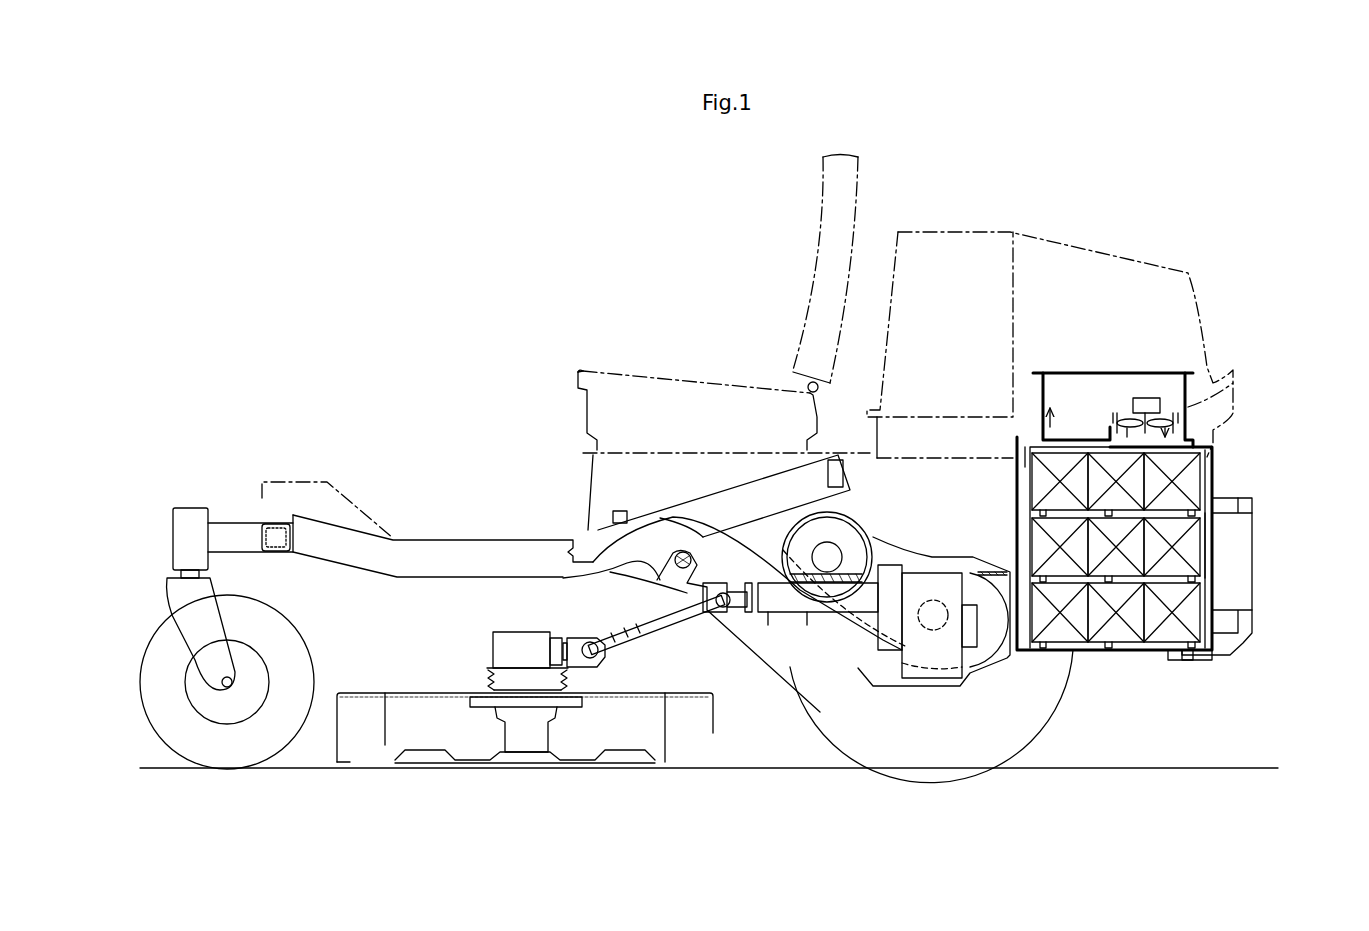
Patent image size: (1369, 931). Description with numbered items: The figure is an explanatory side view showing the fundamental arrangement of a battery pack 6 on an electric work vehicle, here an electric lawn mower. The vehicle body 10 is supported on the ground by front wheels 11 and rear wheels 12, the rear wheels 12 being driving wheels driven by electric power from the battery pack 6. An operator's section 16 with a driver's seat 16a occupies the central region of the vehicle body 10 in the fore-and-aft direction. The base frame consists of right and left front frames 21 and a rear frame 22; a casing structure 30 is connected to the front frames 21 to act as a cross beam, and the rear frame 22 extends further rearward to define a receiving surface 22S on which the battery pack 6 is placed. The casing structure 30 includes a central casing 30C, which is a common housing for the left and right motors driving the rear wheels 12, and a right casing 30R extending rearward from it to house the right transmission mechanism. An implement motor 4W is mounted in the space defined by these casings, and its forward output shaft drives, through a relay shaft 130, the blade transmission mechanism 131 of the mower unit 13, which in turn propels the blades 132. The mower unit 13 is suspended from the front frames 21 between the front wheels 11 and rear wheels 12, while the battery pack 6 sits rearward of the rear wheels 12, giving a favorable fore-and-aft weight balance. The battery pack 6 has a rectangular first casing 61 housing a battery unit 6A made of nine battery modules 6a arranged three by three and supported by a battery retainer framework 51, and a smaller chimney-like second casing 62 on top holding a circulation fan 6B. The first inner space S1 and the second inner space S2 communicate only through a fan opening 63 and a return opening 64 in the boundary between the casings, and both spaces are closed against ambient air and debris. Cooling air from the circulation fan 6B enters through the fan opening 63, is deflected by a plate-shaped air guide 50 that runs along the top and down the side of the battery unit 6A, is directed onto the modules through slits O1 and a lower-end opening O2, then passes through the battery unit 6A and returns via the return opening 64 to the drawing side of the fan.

The operator's section 16 is at (557, 226).
The driver's seat 16a is at (632, 368).
The vehicle body 10 is at (315, 510).
The front wheels 11 is at (227, 762).
The rear wheels 12 is at (990, 757).
The mower unit 13 is at (400, 684).
The front frames 21 is at (440, 568).
The rear frame 22 is at (1250, 637).
The receiving surface 22S is at (1173, 655).
The relay shaft 130 is at (657, 627).
The blade transmission mechanism 131 is at (527, 636).
The blades 132 is at (497, 762).
The casing structure 30 is at (800, 508).
The central casing 30C is at (773, 547).
The right casing 30R is at (868, 617).
The implement motor 4W is at (942, 674).
The battery pack 6 is at (1119, 474).
The battery modules 6a is at (1033, 477).
The battery unit 6A is at (1067, 645).
The circulation fan 6B is at (1150, 402).
The return opening 64 is at (1062, 424).
The fan opening 63 is at (1213, 462).
The second casing 62 is at (1197, 408).
The first casing 61 is at (1213, 637).
The battery retainer framework 51 is at (1213, 480).
The air guide 50 is at (1210, 552).
The slits O1 is at (1210, 518).
The lower-end opening O2 is at (1206, 582).
The first inner space S1 is at (1040, 540).
The second inner space S2 is at (1058, 388).